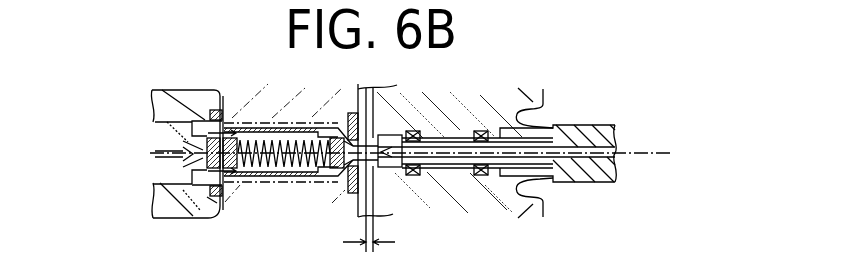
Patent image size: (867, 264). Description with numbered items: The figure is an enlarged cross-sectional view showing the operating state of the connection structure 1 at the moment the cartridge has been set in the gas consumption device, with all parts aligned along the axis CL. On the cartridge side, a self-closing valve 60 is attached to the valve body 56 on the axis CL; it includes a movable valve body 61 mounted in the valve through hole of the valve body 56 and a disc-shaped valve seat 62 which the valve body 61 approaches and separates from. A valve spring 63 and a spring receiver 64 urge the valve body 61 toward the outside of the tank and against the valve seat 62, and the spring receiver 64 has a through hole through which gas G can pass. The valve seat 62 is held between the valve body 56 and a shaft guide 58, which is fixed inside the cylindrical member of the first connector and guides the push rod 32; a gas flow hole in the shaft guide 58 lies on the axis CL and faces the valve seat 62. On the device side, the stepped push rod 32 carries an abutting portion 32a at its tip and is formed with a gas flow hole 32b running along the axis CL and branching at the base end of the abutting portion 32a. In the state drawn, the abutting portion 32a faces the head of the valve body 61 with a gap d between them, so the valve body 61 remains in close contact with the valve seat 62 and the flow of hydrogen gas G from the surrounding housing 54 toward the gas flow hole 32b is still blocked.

The gas injection device 1 is at (364, 82).
The push rod 32 is at (594, 126).
The abutting portion 32a is at (376, 146).
The gas flow hole 32b is at (562, 160).
The housing 54 is at (150, 102).
The valve body 56 is at (307, 183).
The shaft guide 58 is at (545, 202).
The self-closing valve 60 is at (257, 113).
The valve body 61 is at (314, 181).
The valve seat 62 is at (340, 113).
The valve spring 63 is at (260, 177).
The spring receiver 64 is at (208, 214).
The gas G is at (166, 154).
The gap d is at (378, 242).
The axis CL is at (431, 153).